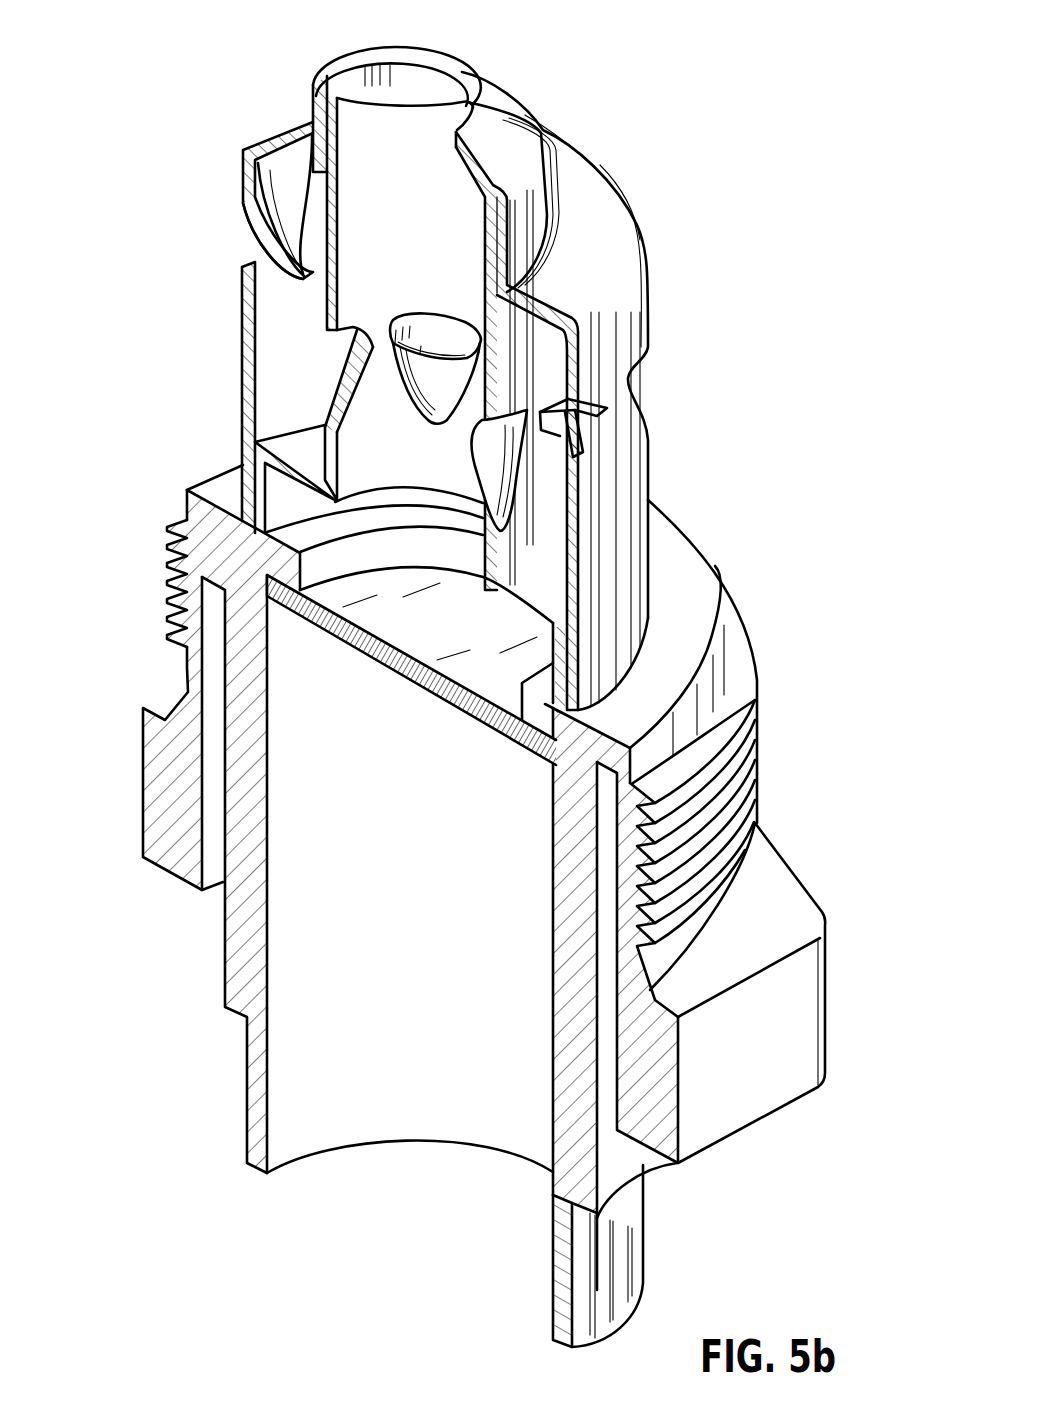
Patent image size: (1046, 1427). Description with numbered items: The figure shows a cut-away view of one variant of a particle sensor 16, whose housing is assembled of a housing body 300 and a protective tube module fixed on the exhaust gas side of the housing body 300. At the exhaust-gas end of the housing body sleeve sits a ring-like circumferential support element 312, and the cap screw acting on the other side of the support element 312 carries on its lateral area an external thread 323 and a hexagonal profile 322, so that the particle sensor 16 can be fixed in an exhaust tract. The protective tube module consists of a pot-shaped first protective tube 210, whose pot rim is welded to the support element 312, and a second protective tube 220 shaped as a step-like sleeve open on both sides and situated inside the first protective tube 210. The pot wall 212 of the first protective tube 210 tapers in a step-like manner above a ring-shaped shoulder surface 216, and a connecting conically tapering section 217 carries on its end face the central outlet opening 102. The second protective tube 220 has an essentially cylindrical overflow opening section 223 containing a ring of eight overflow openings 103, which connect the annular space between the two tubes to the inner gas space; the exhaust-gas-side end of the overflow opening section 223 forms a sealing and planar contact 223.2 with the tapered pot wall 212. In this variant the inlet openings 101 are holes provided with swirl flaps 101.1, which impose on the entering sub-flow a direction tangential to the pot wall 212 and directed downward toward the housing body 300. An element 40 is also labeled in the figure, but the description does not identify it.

The particle sensor 16 is at (468, 673).
The partition wall 40 is at (445, 698).
The inlet openings 101 is at (252, 251).
The swirl flaps 101.1 is at (272, 233).
The outlet opening 102 is at (445, 82).
The overflow openings 103 is at (333, 370).
The first protective tube 210 is at (553, 355).
The pot wall 212 is at (548, 197).
The ring-shaped shoulder surface 216 is at (607, 213).
The conically tapering section 217 is at (507, 112).
The second protective tube 220 is at (433, 307).
The overflow opening section 223 is at (327, 305).
The sealing and planar contact 223.2 is at (312, 126).
The housing body 300 is at (467, 906).
The support element 312 is at (200, 514).
The hexagonal profile 322 is at (760, 1095).
The external thread 323 is at (165, 609).